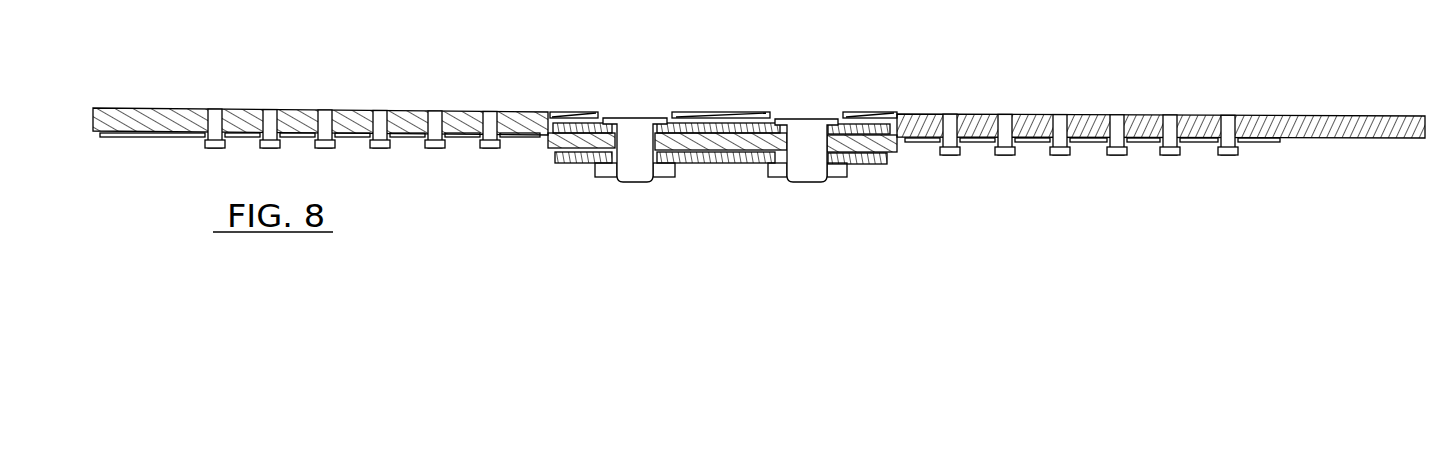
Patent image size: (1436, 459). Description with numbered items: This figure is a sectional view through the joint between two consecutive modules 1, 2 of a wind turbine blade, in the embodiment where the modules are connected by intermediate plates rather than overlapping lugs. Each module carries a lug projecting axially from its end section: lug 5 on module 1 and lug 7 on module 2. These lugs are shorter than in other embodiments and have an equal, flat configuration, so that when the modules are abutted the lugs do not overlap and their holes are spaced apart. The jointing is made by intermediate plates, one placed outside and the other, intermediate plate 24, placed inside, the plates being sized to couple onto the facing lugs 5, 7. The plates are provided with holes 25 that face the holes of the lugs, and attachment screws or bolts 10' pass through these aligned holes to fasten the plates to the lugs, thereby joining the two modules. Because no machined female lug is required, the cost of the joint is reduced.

The module 1 is at (165, 122).
The module 2 is at (1362, 138).
The lug 5 is at (530, 138).
The lug 7 is at (907, 143).
The attachment screws or bolts 10' is at (717, 182).
The intermediate plate 24 is at (708, 160).
The holes 25 is at (745, 122).